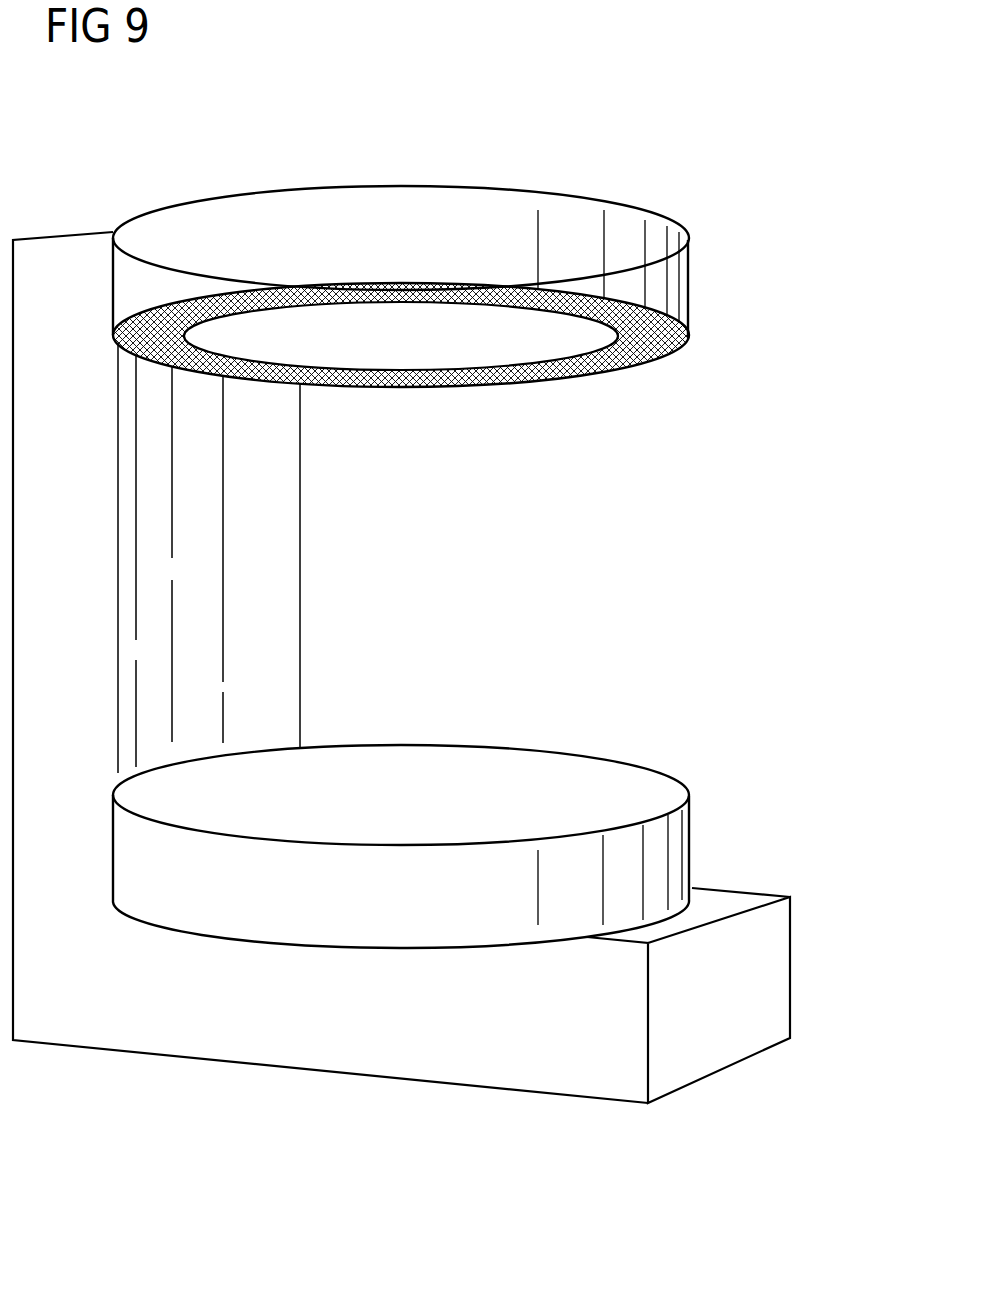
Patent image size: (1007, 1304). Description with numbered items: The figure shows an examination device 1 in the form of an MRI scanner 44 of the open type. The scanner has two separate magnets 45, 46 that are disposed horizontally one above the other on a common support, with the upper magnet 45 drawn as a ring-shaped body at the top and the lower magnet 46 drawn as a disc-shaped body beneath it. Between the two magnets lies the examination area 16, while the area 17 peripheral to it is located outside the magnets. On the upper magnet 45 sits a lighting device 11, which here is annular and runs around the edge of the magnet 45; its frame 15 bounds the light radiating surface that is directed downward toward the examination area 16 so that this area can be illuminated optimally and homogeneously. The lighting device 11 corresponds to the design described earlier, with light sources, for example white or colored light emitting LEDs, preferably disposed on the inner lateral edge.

The examination device 1 is at (745, 215).
The lighting device 11 is at (660, 362).
The mesh frame ring 15 is at (573, 377).
The examination area 16 is at (470, 618).
The peripheral area 17 is at (785, 722).
The MRI scanner 44 is at (552, 188).
The upper magnet 45 is at (672, 280).
The lower magnet 46 is at (672, 853).